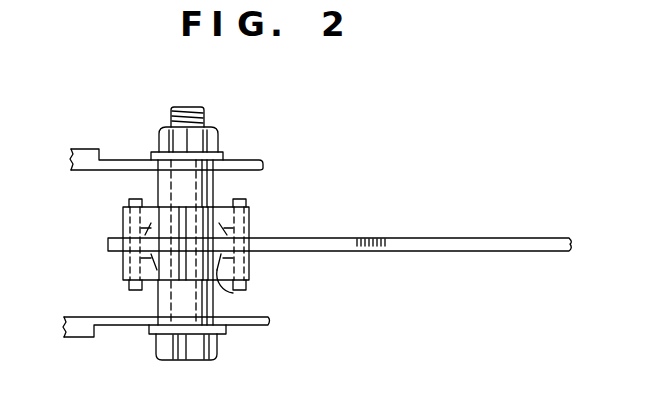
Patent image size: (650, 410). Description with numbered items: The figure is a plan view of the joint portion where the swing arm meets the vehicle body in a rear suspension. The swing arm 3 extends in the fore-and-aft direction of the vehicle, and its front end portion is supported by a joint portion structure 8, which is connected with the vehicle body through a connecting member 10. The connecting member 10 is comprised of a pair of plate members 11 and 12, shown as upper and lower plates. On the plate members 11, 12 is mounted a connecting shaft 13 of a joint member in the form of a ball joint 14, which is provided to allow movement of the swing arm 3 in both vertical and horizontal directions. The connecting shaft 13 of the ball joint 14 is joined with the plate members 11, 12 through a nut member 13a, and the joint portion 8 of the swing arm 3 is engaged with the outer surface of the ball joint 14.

The swing arm 3 is at (491, 235).
The joint portion structure 8 is at (160, 252).
The connecting member 10 is at (247, 328).
The plate member 11 is at (118, 324).
The plate member 12 is at (110, 157).
The connecting shaft 13 is at (204, 196).
The nut member 13a is at (218, 136).
The ball joint 14 is at (232, 291).